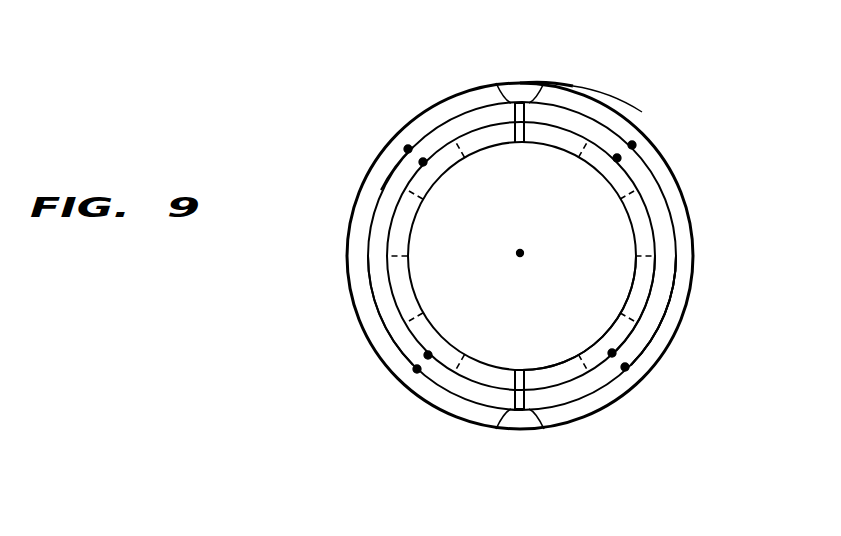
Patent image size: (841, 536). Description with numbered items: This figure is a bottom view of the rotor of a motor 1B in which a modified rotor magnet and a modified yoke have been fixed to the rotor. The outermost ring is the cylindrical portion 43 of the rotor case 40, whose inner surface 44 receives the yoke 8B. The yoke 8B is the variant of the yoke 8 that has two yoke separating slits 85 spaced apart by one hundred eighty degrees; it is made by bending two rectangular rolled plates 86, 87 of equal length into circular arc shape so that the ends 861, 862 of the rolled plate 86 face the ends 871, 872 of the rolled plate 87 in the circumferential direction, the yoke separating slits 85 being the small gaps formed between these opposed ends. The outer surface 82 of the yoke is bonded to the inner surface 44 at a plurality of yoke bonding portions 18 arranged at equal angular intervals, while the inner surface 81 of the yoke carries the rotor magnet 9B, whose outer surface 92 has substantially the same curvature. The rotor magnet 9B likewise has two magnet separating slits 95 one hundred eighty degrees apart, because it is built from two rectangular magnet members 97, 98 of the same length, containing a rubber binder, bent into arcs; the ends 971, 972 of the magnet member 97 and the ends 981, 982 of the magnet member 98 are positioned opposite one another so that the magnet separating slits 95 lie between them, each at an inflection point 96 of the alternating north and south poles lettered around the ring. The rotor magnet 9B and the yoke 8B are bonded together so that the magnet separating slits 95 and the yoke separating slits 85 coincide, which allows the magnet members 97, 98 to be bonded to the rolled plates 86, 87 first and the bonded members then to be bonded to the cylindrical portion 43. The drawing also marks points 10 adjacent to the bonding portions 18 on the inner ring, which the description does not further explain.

The motor 1B is at (686, 76).
The yoke 8 is at (668, 205).
The yoke 8B is at (670, 302).
The rotor magnet 9B is at (660, 242).
The magnetic pole 10 is at (423, 162).
The yoke bonding portions 18 is at (408, 149).
The rotor case 40 is at (592, 51).
The cylindrical portion 43 is at (574, 88).
The inner surface 44 is at (597, 114).
The inner surface 81 is at (395, 210).
The outer surface 82 is at (380, 190).
The yoke separating slit 85 is at (521, 102).
The rolled plate 86 is at (385, 307).
The rolled plate 87 is at (663, 272).
The outer surface 92 is at (387, 247).
The magnet separating slit 95 is at (525, 256).
The inflection points 96 is at (518, 153).
The magnet member 97 is at (410, 262).
The magnet member 98 is at (635, 256).
The end 861 is at (500, 415).
The end 862 is at (501, 96).
The end 871 is at (541, 415).
The end 872 is at (540, 96).
The end 971 is at (513, 371).
The end 972 is at (517, 140).
The end 981 is at (527, 371).
The end 982 is at (527, 140).